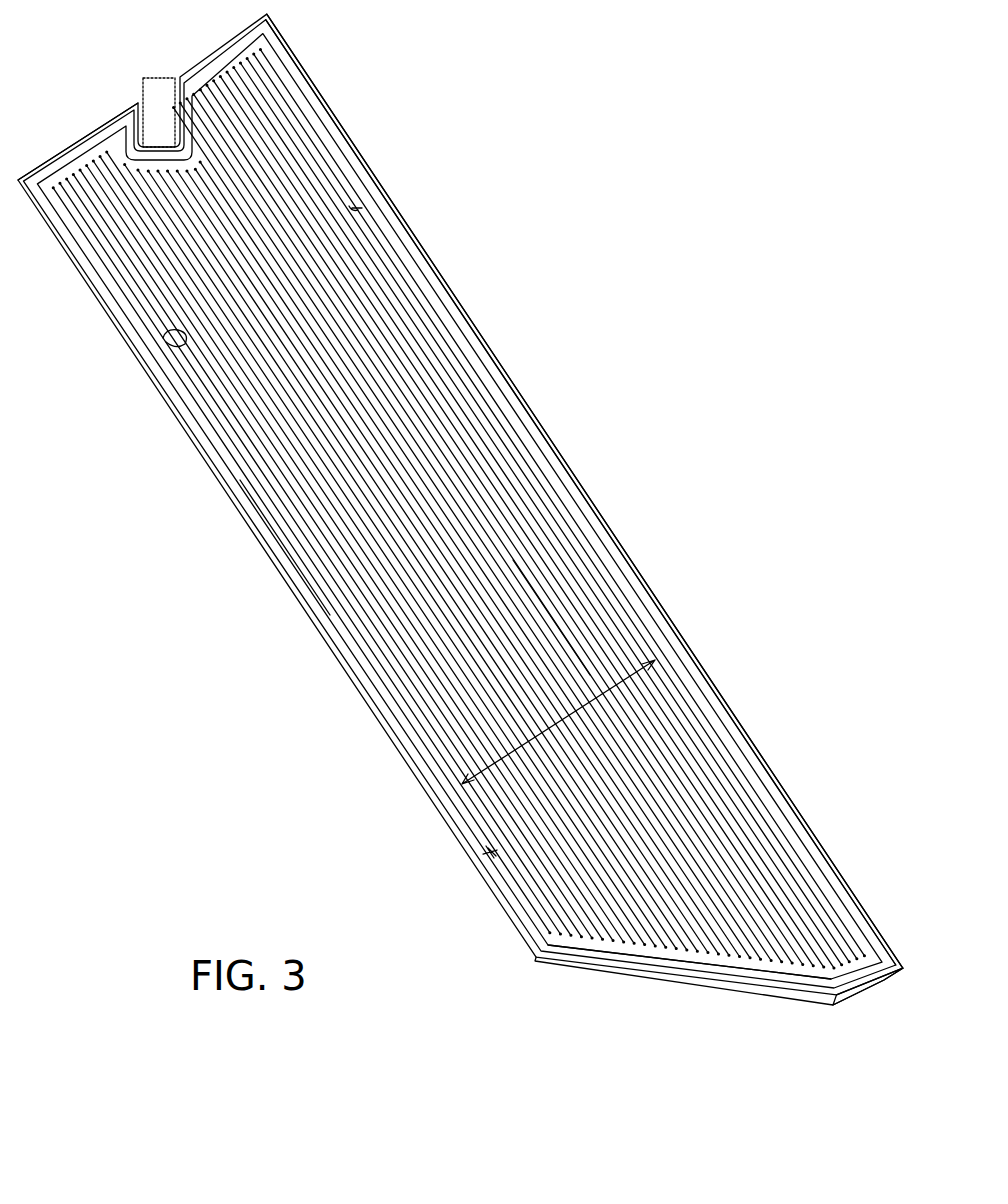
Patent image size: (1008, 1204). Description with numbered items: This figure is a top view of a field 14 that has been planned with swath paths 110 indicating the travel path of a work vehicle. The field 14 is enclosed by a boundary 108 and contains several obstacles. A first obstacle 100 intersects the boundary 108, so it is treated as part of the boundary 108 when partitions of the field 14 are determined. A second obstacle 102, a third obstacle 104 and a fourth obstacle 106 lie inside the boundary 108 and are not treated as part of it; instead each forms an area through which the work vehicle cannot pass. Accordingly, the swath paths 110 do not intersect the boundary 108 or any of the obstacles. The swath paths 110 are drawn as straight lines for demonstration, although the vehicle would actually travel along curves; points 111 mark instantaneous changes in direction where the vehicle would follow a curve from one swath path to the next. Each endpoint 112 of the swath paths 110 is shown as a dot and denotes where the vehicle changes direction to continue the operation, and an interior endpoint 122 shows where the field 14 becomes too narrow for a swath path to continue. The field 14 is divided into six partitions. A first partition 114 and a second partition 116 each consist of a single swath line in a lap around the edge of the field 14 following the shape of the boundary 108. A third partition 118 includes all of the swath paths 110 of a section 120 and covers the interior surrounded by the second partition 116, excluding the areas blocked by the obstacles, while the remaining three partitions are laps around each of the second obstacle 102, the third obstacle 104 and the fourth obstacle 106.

The field 14 is at (292, 722).
The first obstacle 100 is at (165, 103).
The second obstacle 102 is at (358, 208).
The third obstacle 104 is at (490, 853).
The fourth obstacle 106 is at (168, 338).
The boundary 108 is at (18, 165).
The swath paths 110 is at (575, 512).
The points 111 is at (884, 980).
The endpoints 112 is at (715, 963).
The first partition 114 is at (758, 765).
The second partition 116 is at (785, 818).
The third partition 118 is at (556, 612).
The section 120 is at (640, 686).
The interior endpoint 122 is at (285, 527).